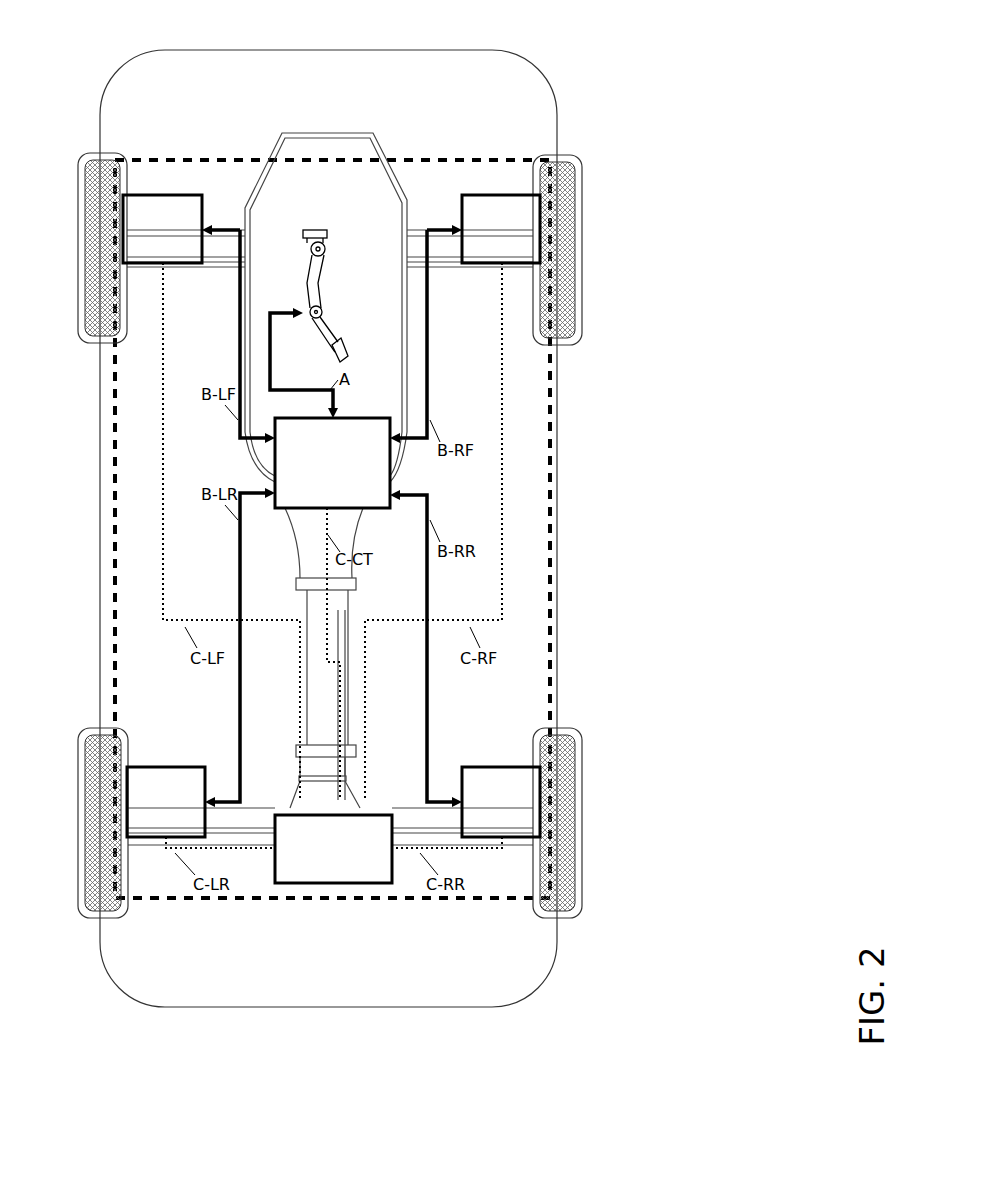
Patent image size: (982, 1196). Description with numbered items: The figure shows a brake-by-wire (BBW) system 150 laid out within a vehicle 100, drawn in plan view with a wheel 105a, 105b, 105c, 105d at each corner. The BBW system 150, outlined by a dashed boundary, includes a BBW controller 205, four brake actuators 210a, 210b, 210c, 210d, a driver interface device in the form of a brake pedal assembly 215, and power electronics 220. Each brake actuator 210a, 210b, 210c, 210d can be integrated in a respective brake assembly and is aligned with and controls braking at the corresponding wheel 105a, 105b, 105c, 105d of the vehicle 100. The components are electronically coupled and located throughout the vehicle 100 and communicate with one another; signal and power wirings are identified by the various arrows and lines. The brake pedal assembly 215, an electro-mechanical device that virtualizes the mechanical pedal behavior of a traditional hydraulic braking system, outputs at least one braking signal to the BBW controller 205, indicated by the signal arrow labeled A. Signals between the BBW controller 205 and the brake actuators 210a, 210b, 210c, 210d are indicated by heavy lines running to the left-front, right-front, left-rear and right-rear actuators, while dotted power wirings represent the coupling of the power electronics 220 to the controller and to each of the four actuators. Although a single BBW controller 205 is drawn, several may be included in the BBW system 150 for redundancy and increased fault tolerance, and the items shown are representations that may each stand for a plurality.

The vehicle 100 is at (122, 83).
The BBW system 150 is at (215, 158).
The wheel 105a is at (82, 243).
The wheel 105b is at (590, 262).
The wheel 105c is at (88, 830).
The wheel 105d is at (588, 826).
The BBW controller 205 is at (332, 463).
The brake actuator 210a is at (162, 229).
The brake actuator 210b is at (501, 229).
The brake actuator 210c is at (166, 802).
The brake actuator 210d is at (501, 802).
The brake pedal assembly 215 is at (330, 243).
The power electronics 220 is at (333, 849).